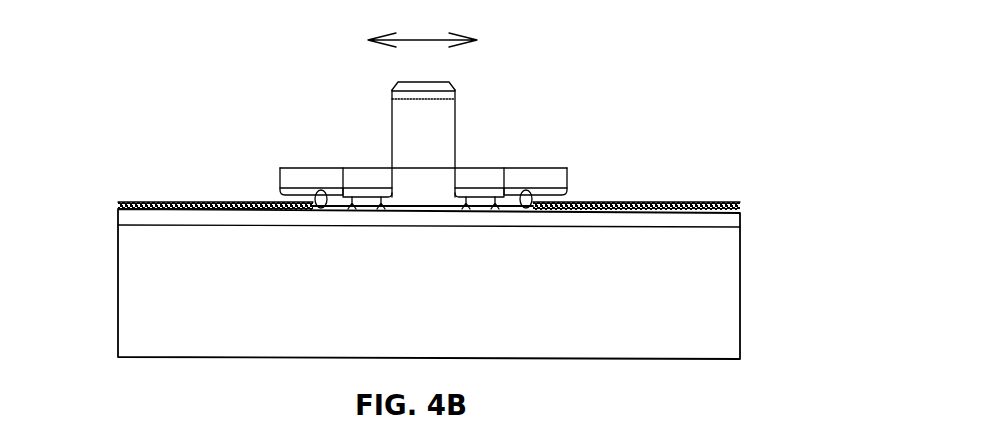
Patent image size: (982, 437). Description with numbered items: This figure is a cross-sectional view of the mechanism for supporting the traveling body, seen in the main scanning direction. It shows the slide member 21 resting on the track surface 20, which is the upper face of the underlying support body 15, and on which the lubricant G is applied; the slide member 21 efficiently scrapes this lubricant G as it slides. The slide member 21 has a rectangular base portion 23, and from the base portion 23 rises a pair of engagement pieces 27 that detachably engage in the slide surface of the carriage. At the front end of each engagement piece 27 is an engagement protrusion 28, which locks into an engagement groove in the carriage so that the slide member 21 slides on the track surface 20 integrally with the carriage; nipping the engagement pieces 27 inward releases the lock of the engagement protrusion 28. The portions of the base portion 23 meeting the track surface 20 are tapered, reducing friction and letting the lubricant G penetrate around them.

The substrate 15 is at (118, 257).
The track surface 20 is at (208, 202).
The slide member 21 is at (456, 121).
The base portion 23 is at (567, 182).
The engagement pieces 27 is at (392, 127).
The engagement protrusion 28 is at (392, 98).
The lubricant G is at (668, 205).